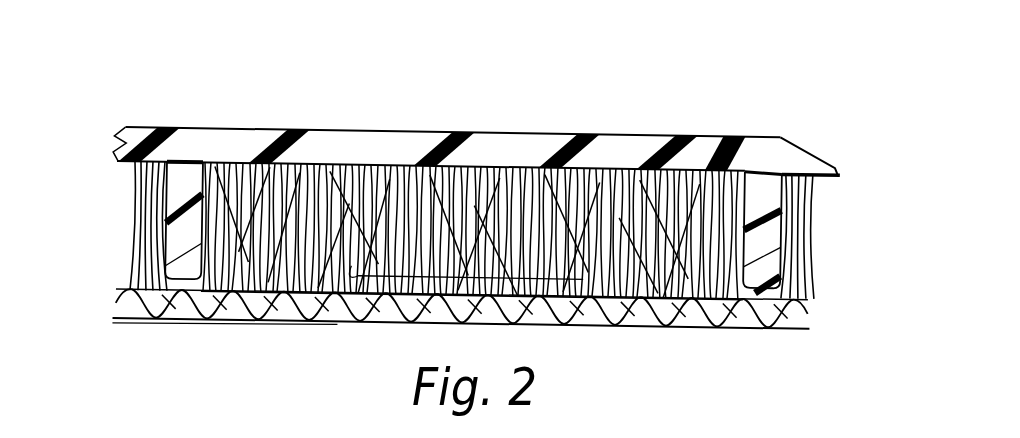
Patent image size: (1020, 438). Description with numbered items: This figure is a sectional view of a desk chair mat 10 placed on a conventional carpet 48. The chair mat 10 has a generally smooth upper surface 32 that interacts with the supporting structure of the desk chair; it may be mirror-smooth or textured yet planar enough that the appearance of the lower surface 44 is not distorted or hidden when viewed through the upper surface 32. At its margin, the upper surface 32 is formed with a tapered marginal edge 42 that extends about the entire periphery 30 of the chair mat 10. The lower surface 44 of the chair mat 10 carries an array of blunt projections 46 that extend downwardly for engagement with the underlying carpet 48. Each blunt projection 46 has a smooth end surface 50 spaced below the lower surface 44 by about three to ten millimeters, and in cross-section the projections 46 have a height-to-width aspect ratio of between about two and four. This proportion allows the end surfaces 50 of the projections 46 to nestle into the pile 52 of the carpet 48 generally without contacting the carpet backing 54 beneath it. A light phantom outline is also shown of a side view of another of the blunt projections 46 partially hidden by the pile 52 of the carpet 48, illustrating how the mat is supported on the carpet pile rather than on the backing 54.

The chair mat 10 is at (348, 78).
The upper surface 32 is at (562, 130).
The tapered marginal edge 42 is at (800, 142).
The periphery 30 is at (838, 176).
The lower surface 44 is at (816, 182).
The projections 46 is at (768, 251).
The pile 52 is at (268, 248).
The carpet backing 54 is at (286, 300).
The carpet 48 is at (653, 266).
The end surface 50 is at (762, 300).